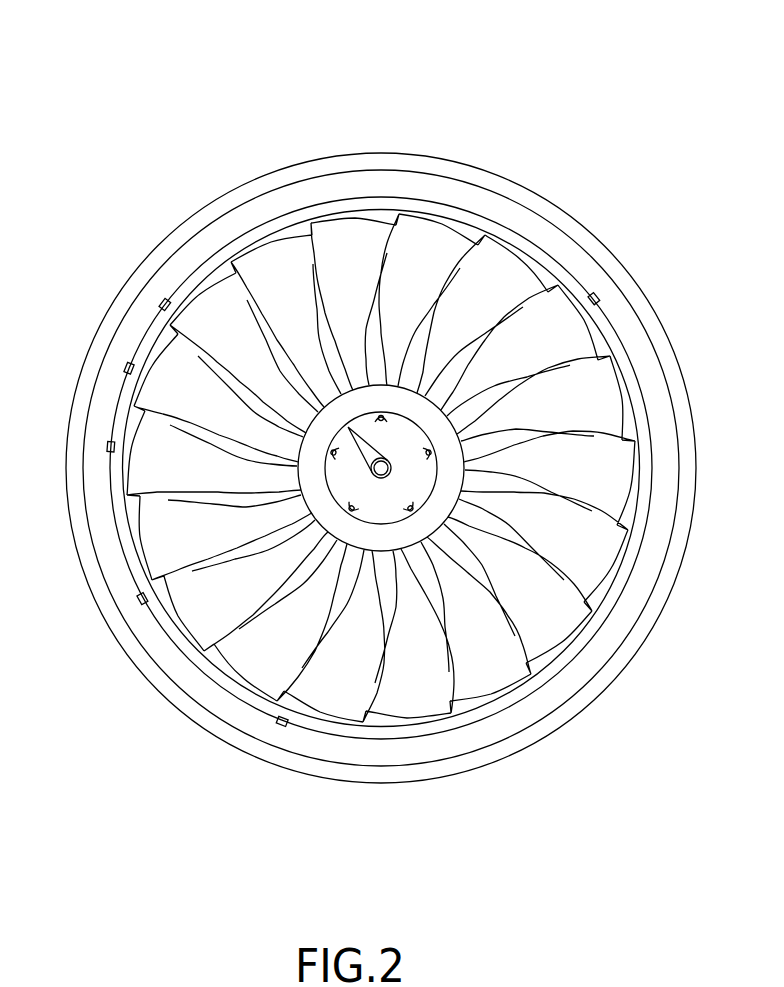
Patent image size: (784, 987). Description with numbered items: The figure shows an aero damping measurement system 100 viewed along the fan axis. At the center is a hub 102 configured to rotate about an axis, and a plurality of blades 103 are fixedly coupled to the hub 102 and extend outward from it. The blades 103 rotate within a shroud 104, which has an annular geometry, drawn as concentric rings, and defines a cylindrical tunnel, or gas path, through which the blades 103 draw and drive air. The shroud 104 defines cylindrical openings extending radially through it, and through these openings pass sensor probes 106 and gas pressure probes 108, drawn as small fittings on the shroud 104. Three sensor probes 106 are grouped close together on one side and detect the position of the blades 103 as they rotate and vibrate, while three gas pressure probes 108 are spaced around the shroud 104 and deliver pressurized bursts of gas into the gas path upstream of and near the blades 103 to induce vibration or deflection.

The aero damping measurement system 100 is at (112, 97).
The hub 102 is at (310, 443).
The blades 103 is at (143, 442).
The shroud 104 is at (346, 168).
The sensor probes 106 is at (160, 301).
The gas pressure probes 108 is at (600, 300).